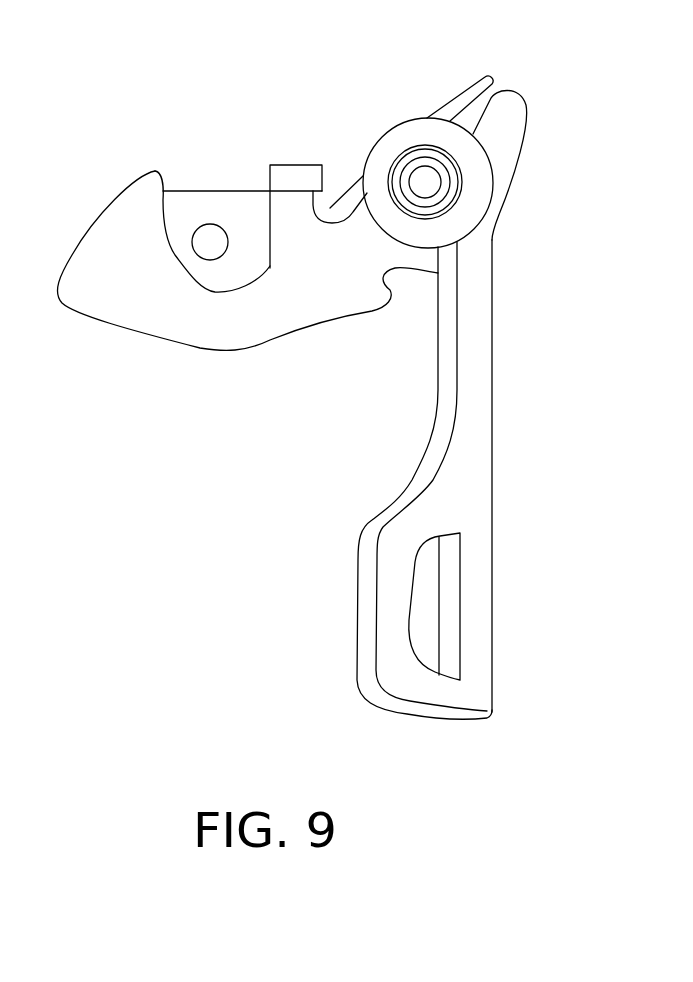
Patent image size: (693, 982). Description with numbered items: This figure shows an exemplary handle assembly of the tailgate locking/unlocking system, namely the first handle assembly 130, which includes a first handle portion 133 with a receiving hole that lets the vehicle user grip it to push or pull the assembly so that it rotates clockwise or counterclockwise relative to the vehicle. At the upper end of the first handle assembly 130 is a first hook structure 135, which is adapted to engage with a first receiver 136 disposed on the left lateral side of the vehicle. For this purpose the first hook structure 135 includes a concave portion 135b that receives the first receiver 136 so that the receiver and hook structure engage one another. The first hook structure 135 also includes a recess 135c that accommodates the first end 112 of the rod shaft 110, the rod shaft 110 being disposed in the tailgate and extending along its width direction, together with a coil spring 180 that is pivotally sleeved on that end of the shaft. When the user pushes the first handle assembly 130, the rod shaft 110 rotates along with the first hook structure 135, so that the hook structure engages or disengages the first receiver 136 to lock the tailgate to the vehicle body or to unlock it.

The rod shaft 110 is at (433, 175).
The first end 112 is at (430, 193).
The first handle assembly 130 is at (537, 523).
The first handle portion 133 is at (473, 592).
The first hook structure 135 is at (148, 303).
The concave portion 135b is at (177, 247).
The recess 135c is at (403, 205).
The first receiver 136 is at (210, 242).
The coil spring 180 is at (427, 180).